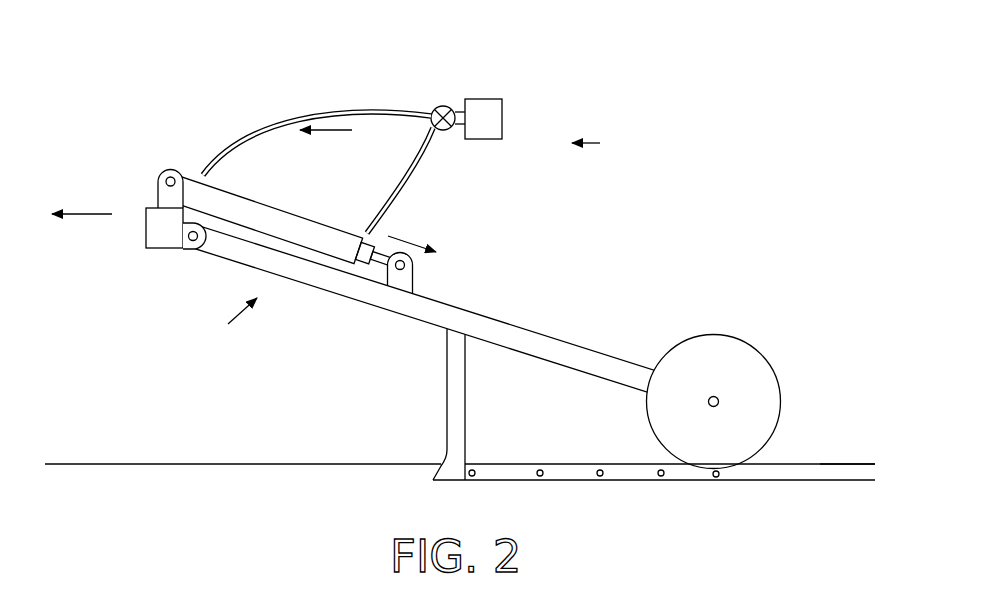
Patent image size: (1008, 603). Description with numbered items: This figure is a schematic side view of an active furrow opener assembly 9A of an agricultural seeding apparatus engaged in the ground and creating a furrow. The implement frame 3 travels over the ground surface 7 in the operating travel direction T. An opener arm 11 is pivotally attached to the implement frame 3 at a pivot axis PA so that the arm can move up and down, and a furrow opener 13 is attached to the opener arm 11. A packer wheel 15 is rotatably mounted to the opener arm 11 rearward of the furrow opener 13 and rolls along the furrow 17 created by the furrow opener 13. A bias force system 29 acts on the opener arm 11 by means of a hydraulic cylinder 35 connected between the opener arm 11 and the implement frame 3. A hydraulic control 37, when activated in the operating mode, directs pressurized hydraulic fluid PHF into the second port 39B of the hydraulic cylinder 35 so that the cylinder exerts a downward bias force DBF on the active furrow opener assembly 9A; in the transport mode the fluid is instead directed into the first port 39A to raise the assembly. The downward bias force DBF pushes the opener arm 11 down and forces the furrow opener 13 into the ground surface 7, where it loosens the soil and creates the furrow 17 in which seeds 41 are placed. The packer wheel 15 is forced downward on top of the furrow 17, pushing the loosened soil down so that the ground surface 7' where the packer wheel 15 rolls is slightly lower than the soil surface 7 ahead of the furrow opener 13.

The implement frame 3 is at (147, 250).
The ground surface 7 is at (243, 441).
The ground surface 7' is at (848, 445).
The active furrow opener assembly 9A is at (215, 332).
The opener arm 11 is at (522, 327).
The furrow opener 13 is at (433, 477).
The packer wheel 15 is at (763, 352).
The furrow 17 is at (627, 476).
The bias force system 29 is at (600, 143).
The hydraulic cylinder 35 is at (262, 200).
The hydraulic control 37 is at (442, 105).
The first port 39A is at (381, 229).
The second port 39B is at (202, 172).
The seeds 41 is at (540, 465).
The operating travel direction T is at (82, 196).
The pivot axis PA is at (195, 249).
The pressurized hydraulic fluid PHF is at (330, 133).
The downward bias force DBF is at (412, 232).